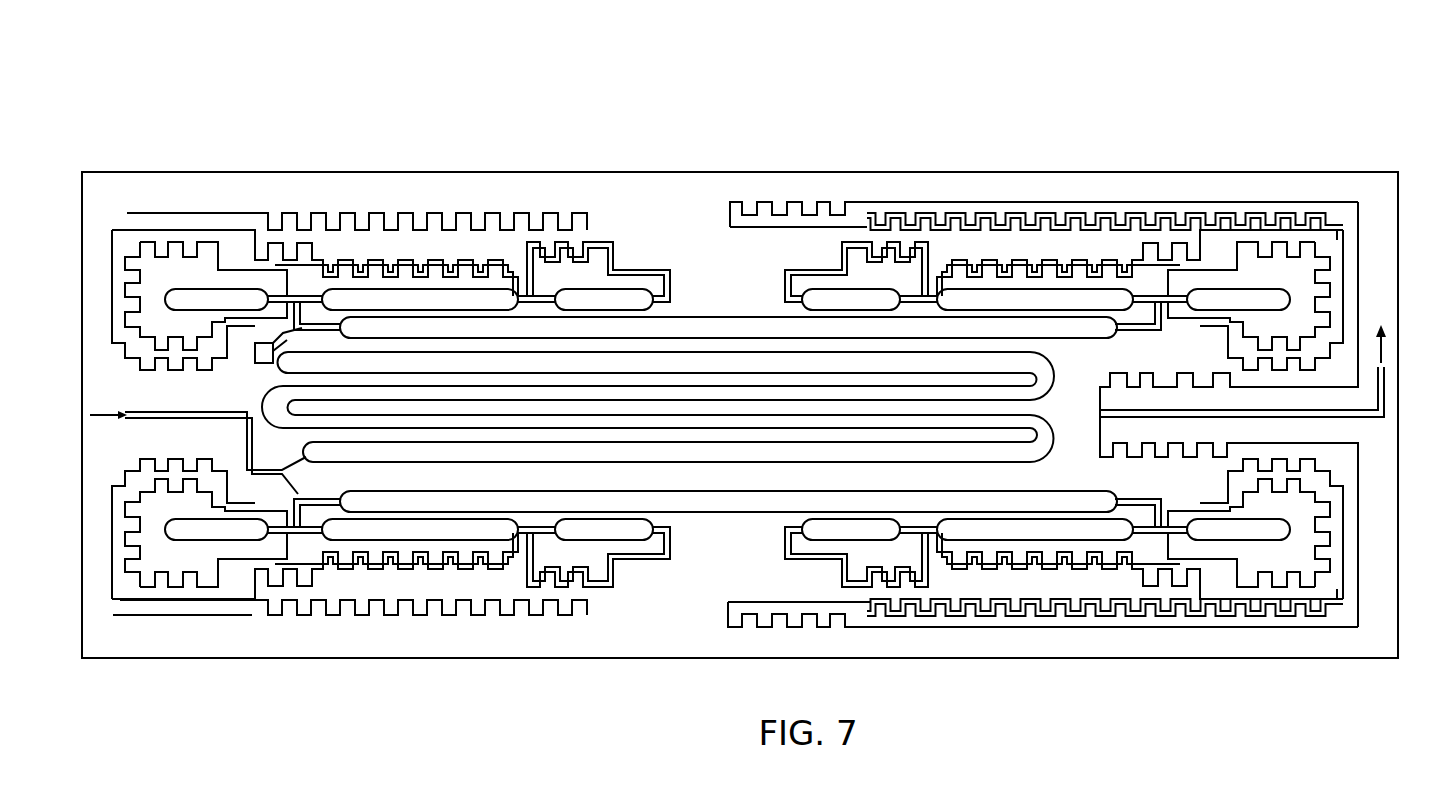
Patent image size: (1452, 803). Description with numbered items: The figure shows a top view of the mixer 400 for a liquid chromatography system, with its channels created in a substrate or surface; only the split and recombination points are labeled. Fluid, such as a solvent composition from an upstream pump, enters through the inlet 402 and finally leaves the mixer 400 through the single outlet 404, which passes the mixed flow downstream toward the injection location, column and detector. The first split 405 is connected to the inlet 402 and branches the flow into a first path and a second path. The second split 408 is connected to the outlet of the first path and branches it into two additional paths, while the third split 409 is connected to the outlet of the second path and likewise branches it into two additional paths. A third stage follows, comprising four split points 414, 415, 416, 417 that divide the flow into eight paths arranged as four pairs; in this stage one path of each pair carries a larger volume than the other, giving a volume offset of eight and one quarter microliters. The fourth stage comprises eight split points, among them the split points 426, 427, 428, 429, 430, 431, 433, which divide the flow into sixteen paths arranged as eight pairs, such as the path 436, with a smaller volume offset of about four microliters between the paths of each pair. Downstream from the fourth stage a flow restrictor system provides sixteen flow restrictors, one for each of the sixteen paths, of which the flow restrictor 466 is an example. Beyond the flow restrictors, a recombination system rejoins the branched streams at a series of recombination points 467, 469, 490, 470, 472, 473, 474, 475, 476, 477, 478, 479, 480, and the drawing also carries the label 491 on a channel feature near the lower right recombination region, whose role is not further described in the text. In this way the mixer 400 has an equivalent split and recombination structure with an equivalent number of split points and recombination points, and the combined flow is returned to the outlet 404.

The mixer 400 is at (388, 146).
The inlet 402 is at (93, 413).
The outlet 404 is at (1384, 400).
The first split 405 is at (248, 477).
The second split 408 is at (281, 338).
The third split 409 is at (298, 493).
The split point 414 is at (1155, 296).
The split point 415 is at (298, 315).
The split point 416 is at (1157, 557).
The split point 417 is at (317, 567).
The split point 426 is at (920, 296).
The split point 427 is at (1168, 300).
The split point 428 is at (535, 296).
The split point 429 is at (287, 304).
The split point 430 is at (920, 528).
The split point 431 is at (1157, 540).
The split point 433 is at (285, 528).
The path 436 is at (537, 530).
The flow restrictor 466 is at (1240, 270).
The recombination point 467 is at (860, 272).
The recombination point 469 is at (598, 270).
The recombination point 470 is at (858, 570).
The recombination point 472 is at (600, 549).
The recombination point 473 is at (222, 560).
The recombination point 474 is at (1340, 232).
The recombination point 475 is at (112, 230).
The recombination point 476 is at (1345, 588).
The recombination point 477 is at (118, 612).
The recombination point 478 is at (730, 226).
The recombination point 479 is at (730, 602).
The recombination point 480 is at (1108, 412).
The recombination point 490 is at (218, 270).
The lower right chamber 491 is at (1237, 557).